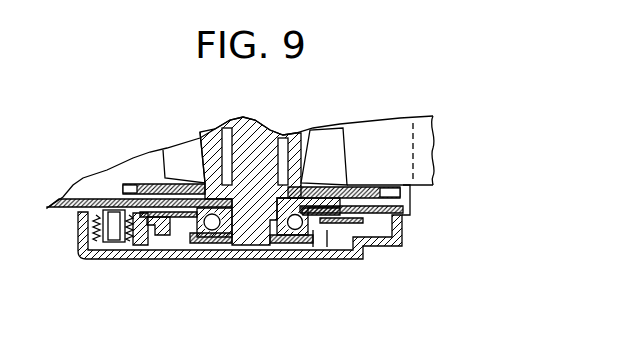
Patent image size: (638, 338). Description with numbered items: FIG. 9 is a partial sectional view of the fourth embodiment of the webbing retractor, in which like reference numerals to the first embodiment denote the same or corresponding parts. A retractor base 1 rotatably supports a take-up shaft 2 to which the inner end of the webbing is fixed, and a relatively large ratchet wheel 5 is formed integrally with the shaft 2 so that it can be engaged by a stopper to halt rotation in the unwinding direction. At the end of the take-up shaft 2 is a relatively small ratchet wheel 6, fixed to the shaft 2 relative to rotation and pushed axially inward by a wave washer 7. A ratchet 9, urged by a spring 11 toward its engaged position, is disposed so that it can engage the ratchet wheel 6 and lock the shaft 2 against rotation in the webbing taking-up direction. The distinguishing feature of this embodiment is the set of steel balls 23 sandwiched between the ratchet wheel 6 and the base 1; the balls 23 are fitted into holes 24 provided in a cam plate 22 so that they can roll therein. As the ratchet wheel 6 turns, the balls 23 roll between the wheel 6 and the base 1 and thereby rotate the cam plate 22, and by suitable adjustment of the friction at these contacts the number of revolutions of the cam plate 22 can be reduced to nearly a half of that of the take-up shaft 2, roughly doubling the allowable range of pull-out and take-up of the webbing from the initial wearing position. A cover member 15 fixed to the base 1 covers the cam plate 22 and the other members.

The retractor base 1 is at (85, 192).
The take-up shaft 2 is at (253, 238).
The ratchet wheel 5 is at (373, 197).
The ratchet wheel 6 is at (217, 237).
The wave washer 7 is at (287, 232).
The ratchet 9 is at (158, 243).
The spring 11 is at (90, 222).
The cover member 15 is at (353, 260).
The cam plate 22 is at (150, 224).
The steel balls 23 is at (212, 214).
The holes 24 is at (190, 220).